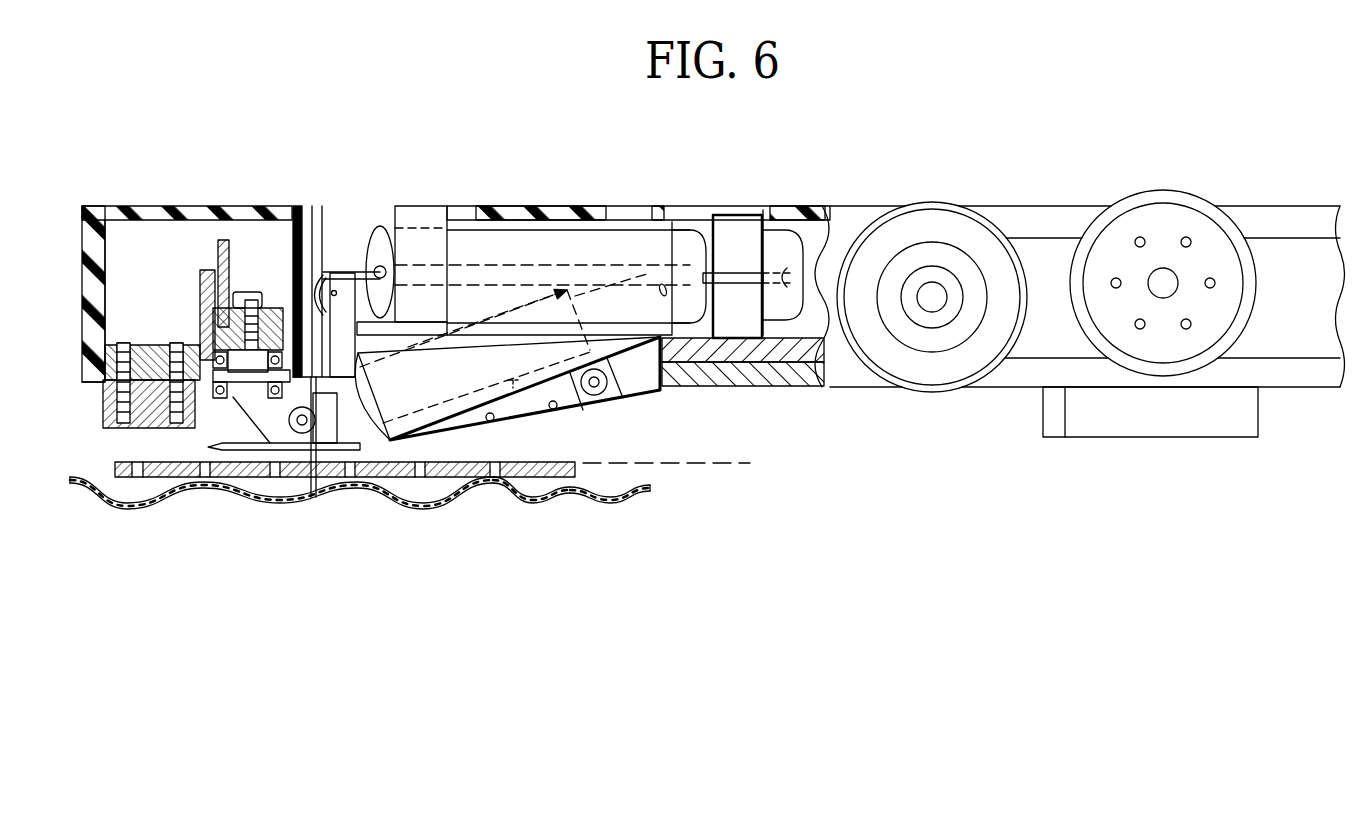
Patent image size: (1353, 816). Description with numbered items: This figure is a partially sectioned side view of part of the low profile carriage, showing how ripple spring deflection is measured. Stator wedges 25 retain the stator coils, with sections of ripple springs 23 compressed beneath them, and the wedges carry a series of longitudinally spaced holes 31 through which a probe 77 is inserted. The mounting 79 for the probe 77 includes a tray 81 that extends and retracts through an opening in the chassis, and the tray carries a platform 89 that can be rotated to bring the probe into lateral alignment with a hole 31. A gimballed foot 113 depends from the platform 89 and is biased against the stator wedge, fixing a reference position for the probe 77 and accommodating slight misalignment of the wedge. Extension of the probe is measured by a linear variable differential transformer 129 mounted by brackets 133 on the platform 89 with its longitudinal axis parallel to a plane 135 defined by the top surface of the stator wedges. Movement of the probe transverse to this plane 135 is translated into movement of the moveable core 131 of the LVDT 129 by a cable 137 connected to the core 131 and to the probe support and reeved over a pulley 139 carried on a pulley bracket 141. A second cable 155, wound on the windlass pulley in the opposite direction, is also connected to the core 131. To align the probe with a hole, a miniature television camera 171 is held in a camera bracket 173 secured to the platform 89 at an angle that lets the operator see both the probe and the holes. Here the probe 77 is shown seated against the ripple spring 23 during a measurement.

The ripple spring 23 is at (436, 498).
The stator wedge 25 is at (574, 480).
The hole 31 is at (542, 492).
The probe 77 is at (302, 493).
The mounting 79 is at (282, 240).
The tray 81 is at (761, 374).
The platform 89 is at (788, 350).
The gimballed foot 113 is at (250, 452).
The linear variable differential transformer 129 is at (540, 242).
The moveable core 131 is at (605, 208).
The bracket 133 is at (703, 213).
The plane 135 is at (733, 463).
The cable 137 is at (345, 268).
The pulley 139 is at (307, 206).
The pulley bracket 141 is at (367, 287).
The second cable 155 is at (802, 211).
The miniature television camera 171 is at (522, 397).
The camera bracket 173 is at (637, 383).